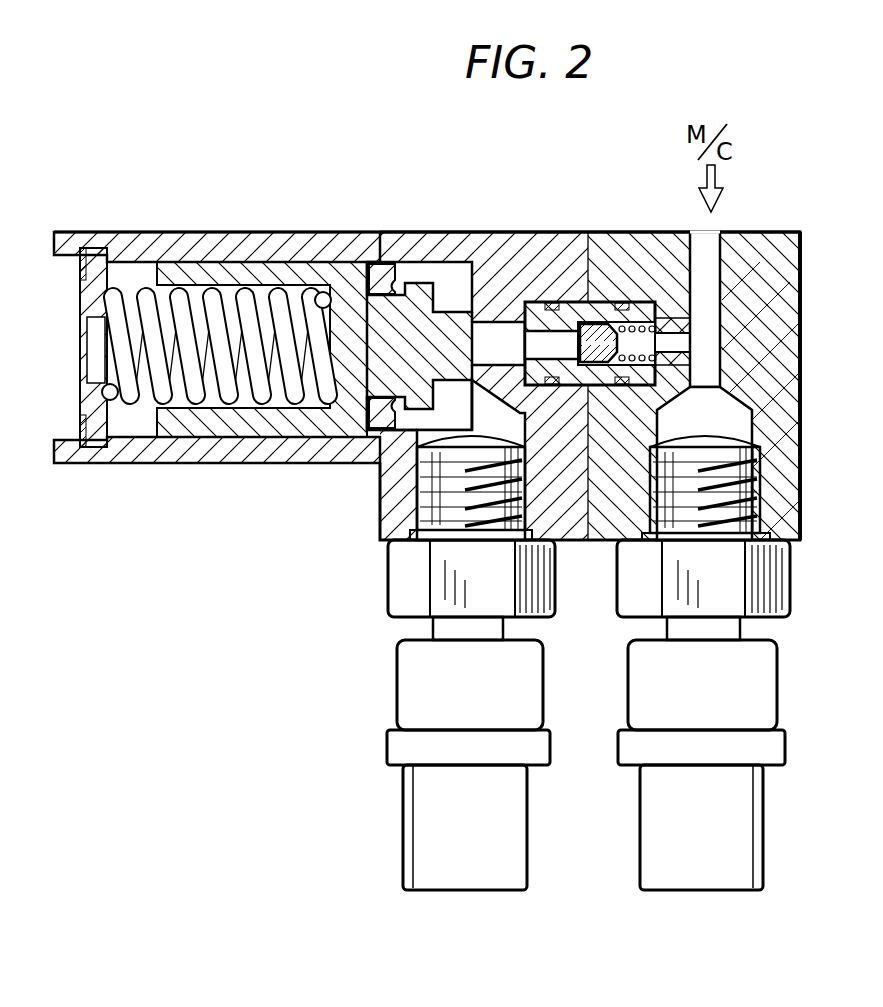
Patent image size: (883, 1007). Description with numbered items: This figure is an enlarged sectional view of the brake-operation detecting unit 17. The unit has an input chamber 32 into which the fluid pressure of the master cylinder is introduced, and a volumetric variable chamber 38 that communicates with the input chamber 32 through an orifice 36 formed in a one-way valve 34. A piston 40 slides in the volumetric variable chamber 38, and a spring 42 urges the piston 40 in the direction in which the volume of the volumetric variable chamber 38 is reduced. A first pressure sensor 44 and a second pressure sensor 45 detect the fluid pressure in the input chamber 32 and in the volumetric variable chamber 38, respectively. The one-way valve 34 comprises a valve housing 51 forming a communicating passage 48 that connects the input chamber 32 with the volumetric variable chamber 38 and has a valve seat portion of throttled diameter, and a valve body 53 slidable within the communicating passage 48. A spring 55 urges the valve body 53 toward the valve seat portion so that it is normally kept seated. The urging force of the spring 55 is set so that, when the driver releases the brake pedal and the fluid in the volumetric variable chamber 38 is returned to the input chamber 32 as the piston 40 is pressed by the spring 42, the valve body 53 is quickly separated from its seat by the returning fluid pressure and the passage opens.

The brake-operation detecting unit 17 is at (476, 232).
The input chamber 32 is at (708, 373).
The one-way valve 34 is at (652, 293).
The orifice 36 is at (565, 300).
The volumetric variable chamber 38 is at (455, 393).
The piston 40 is at (348, 270).
The spring 42 is at (212, 307).
The first pressure sensor 44 is at (752, 680).
The second pressure sensor 45 is at (412, 681).
The communicating passage 48 is at (692, 345).
The valve housing 51 is at (535, 305).
The valve body 53 is at (590, 324).
The spring 55 is at (690, 315).